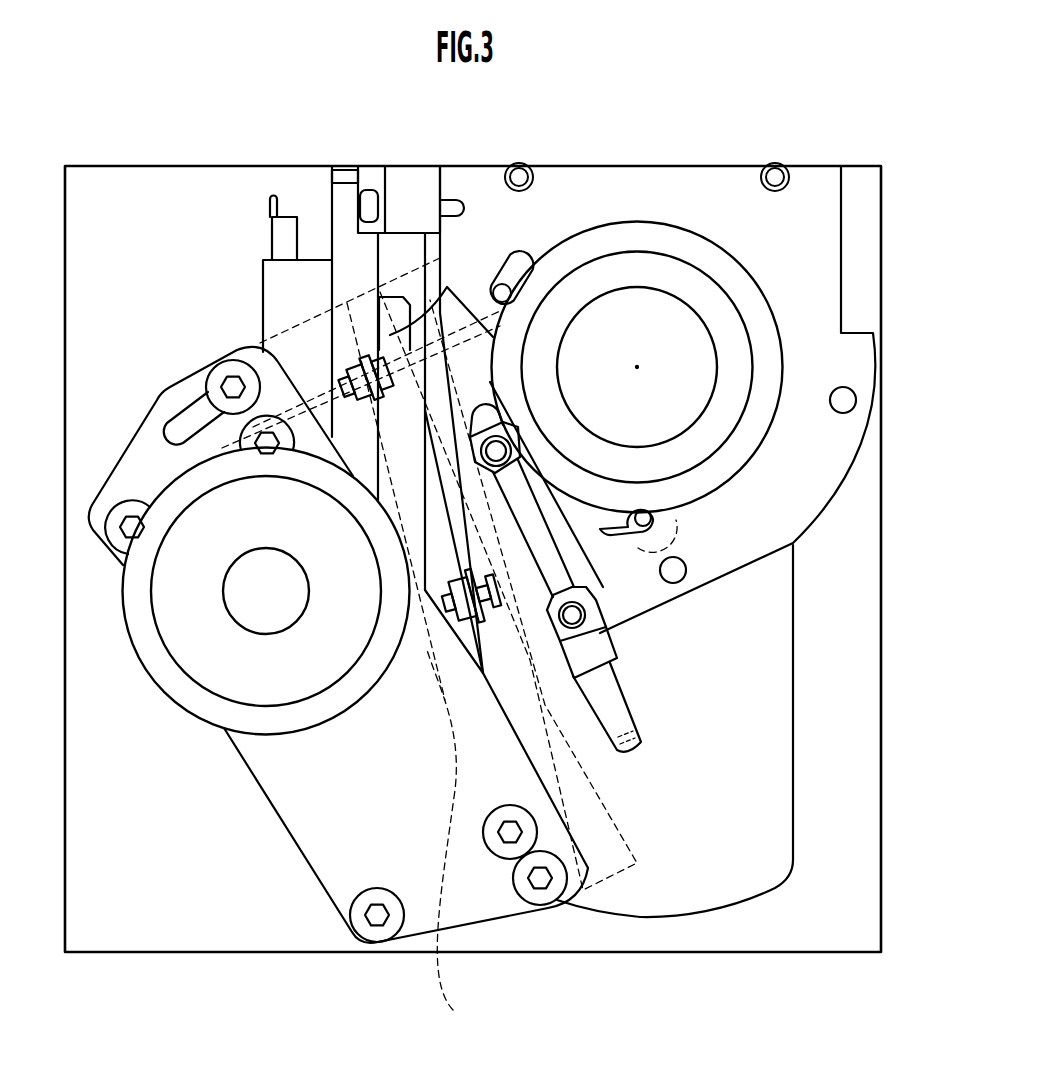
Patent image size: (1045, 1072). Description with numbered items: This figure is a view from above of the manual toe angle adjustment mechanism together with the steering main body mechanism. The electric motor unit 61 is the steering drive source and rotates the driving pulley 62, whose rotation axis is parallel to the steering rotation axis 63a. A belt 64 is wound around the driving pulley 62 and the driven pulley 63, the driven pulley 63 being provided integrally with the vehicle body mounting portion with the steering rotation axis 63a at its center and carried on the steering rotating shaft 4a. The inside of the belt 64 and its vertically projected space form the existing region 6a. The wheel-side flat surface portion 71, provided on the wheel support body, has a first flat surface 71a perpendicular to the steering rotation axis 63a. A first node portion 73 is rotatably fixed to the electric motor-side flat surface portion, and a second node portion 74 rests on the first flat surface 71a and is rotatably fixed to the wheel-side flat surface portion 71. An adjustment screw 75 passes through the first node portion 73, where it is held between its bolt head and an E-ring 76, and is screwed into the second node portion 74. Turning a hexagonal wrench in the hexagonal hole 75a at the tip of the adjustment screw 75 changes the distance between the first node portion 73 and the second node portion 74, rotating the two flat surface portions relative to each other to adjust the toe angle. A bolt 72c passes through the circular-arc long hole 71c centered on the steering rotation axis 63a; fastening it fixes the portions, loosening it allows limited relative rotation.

The steering rotating shaft 4a is at (673, 382).
The existing region 6a is at (366, 478).
The electric motor unit 61 is at (368, 783).
The driving pulley 62 is at (208, 643).
The driven pulley 63 is at (623, 268).
The steering rotation axis 63a is at (637, 367).
The belt 64 is at (453, 1010).
The wheel-side flat surface portion 71 is at (800, 490).
The first flat surface 71a is at (583, 613).
The long hole 71c is at (527, 257).
The bolt 72c is at (503, 262).
The first node portion 73 is at (453, 487).
The second node portion 74 is at (600, 597).
The adjustment screw 75 is at (533, 528).
The hexagonal hole 75a is at (637, 753).
The E-ring 76 is at (496, 451).